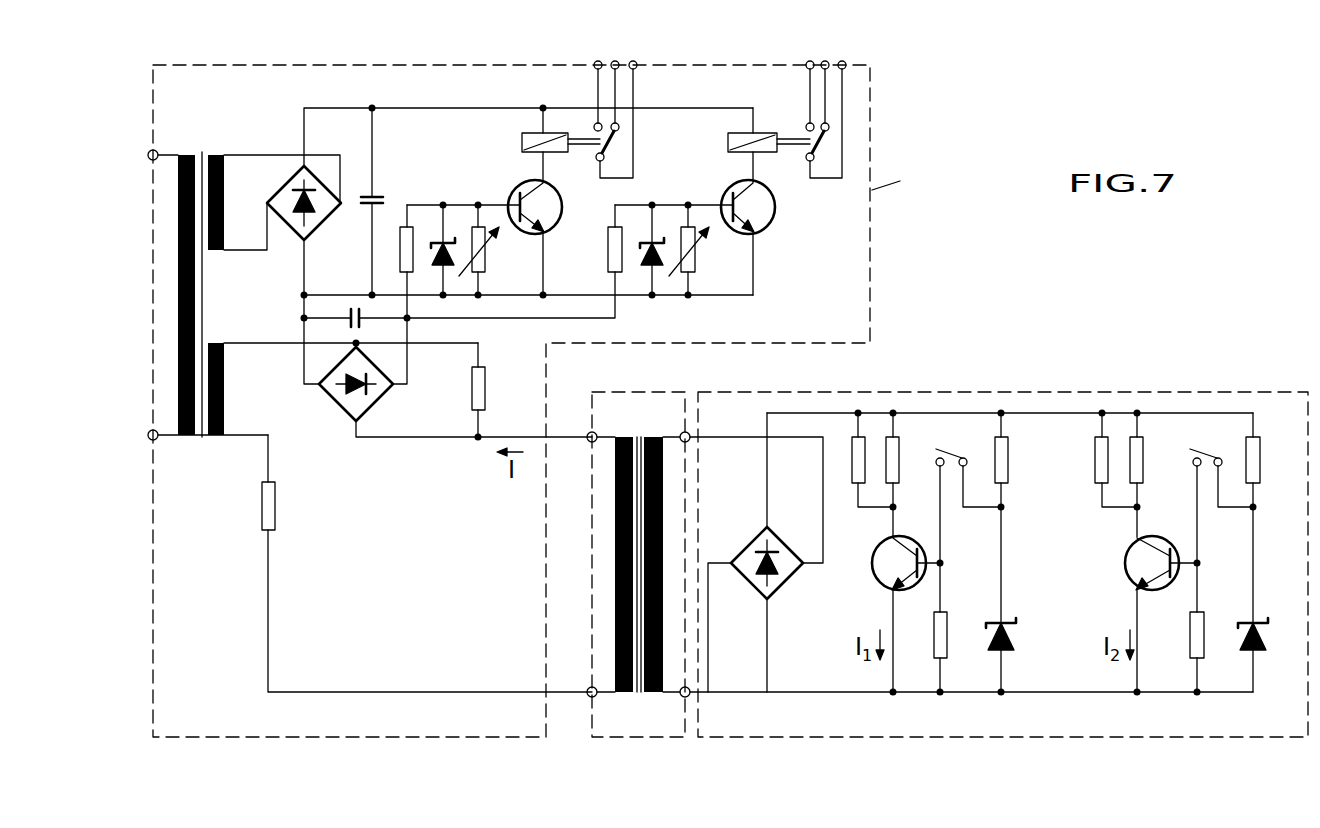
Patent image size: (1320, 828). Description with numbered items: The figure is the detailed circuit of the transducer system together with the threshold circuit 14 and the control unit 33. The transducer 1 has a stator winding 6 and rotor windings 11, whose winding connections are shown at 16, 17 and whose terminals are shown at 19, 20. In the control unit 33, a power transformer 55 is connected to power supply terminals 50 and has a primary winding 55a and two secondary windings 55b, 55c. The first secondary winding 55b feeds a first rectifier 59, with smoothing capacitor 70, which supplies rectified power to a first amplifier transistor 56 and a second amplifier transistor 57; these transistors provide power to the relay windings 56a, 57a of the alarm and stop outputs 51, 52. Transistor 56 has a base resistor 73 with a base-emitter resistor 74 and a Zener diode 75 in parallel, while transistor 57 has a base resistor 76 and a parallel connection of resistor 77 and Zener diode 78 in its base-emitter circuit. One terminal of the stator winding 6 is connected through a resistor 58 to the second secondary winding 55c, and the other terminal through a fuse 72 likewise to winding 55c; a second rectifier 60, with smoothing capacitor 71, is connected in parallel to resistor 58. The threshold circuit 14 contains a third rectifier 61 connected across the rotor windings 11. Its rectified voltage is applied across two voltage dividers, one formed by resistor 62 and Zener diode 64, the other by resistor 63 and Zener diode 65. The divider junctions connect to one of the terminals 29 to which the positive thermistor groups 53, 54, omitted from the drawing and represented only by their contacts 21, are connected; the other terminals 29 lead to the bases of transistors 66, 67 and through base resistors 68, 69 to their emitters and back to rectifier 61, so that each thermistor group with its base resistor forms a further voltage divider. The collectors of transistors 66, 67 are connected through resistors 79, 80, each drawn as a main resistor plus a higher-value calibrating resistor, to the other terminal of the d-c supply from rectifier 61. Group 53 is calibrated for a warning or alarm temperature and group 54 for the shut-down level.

The transformer unit 1 is at (632, 740).
The stator winding 6 is at (615, 514).
The rotor windings 11 is at (663, 522).
The threshold circuit 14 is at (1040, 391).
The primary winding end 16 is at (615, 631).
The secondary winding end 17 is at (663, 640).
The terminal 19 is at (668, 711).
The terminal 20 is at (605, 711).
The switch contact 21 is at (1218, 484).
The terminals 29 is at (1042, 455).
The control unit 33 is at (903, 189).
The power supply terminals 50 is at (493, 401).
The alarm output 51 is at (615, 106).
The stop output 52 is at (826, 106).
The group of thermistors 53 is at (966, 446).
The group of thermistors 54 is at (1222, 446).
The power transformer 55 is at (224, 372).
The primary winding 55a is at (196, 262).
The first secondary winding 55b is at (218, 153).
The second secondary winding 55c is at (218, 440).
The first amplifier transistor 56 is at (562, 207).
The relay winding 56a is at (522, 141).
The second amplifier transistor 57 is at (775, 207).
The relay winding 57a is at (728, 141).
The resistor 58 is at (485, 402).
The first rectifier 59 is at (330, 215).
The second rectifier 60 is at (455, 377).
The third rectifier 61 is at (777, 598).
The resistor 62 is at (1008, 480).
The resistor 63 is at (1260, 480).
The Zener diode 64 is at (1020, 657).
The Zener diode 65 is at (1270, 655).
The transistor 66 is at (872, 563).
The transistor 67 is at (1125, 563).
The base resistor 68 is at (947, 652).
The base resistor 69 is at (1189, 652).
The smoothing capacitor 70 is at (377, 200).
The smoothing capacitor 71 is at (348, 314).
The fuse 72 is at (276, 505).
The base resistor 73 is at (394, 261).
The base-emitter resistor 74 is at (486, 262).
The Zener diode 75 is at (436, 250).
The base resistor 76 is at (607, 262).
The resistor 77 is at (697, 267).
The Zener diode 78 is at (644, 251).
The collector resistors 79 is at (887, 481).
The collector resistors 80 is at (1130, 482).